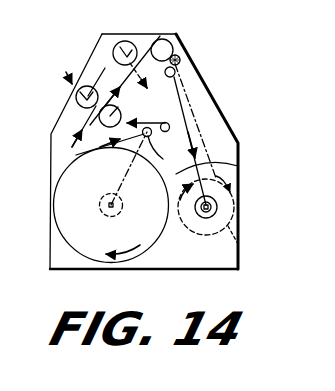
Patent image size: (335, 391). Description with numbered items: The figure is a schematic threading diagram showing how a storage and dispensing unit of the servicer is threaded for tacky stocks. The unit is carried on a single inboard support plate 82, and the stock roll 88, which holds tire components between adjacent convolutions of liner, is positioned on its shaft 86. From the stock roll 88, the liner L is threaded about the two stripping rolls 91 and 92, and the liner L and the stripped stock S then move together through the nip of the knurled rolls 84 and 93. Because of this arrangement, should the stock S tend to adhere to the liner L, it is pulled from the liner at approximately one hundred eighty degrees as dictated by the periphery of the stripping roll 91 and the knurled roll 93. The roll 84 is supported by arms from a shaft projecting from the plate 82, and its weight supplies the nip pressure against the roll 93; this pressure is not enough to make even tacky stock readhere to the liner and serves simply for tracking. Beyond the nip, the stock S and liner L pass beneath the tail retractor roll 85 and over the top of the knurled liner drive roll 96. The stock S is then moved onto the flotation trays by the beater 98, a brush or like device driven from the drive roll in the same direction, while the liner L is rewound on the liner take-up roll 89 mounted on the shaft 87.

The inboard support plate 82 is at (226, 130).
The knurled roll 84 is at (76, 98).
The tail retractor roll 85 is at (116, 41).
The shaft 86 is at (110, 207).
The shaft 87 is at (213, 207).
The stock roll 88 is at (146, 250).
The liner take-up roll 89 is at (238, 246).
The stripping roll 91 is at (166, 155).
The stripping roll 92 is at (166, 131).
The knurled roll 93 is at (120, 111).
The liner drive roll 96 is at (163, 39).
The beater 98 is at (179, 57).
The stock S is at (90, 132).
The liner L is at (238, 166).